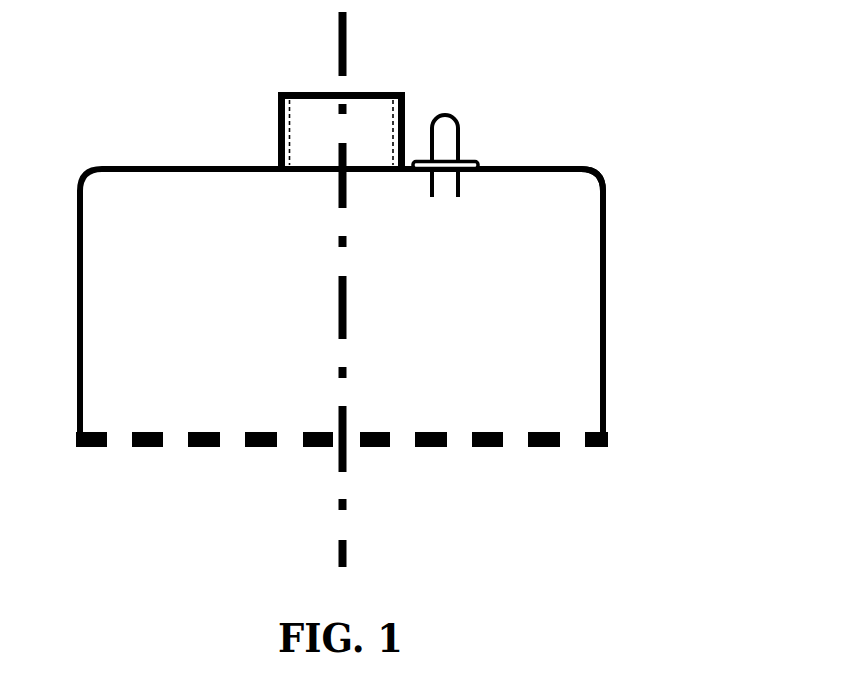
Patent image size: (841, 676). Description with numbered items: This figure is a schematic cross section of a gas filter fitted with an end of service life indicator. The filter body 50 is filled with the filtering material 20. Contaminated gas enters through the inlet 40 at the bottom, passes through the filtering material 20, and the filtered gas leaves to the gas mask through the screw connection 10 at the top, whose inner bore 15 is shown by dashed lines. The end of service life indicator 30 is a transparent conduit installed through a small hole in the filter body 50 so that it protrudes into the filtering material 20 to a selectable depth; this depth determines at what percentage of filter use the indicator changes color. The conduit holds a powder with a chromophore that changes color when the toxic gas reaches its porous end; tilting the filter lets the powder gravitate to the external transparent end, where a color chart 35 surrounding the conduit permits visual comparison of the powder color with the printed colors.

The screw connection 10 is at (311, 86).
The inner bore of sleeve 15 is at (361, 89).
The filtering material 20 is at (211, 185).
The end of service life indicator 30 is at (468, 106).
The color chart 35 is at (490, 146).
The contaminated gas inlet 40 is at (219, 466).
The filter body 50 is at (579, 152).